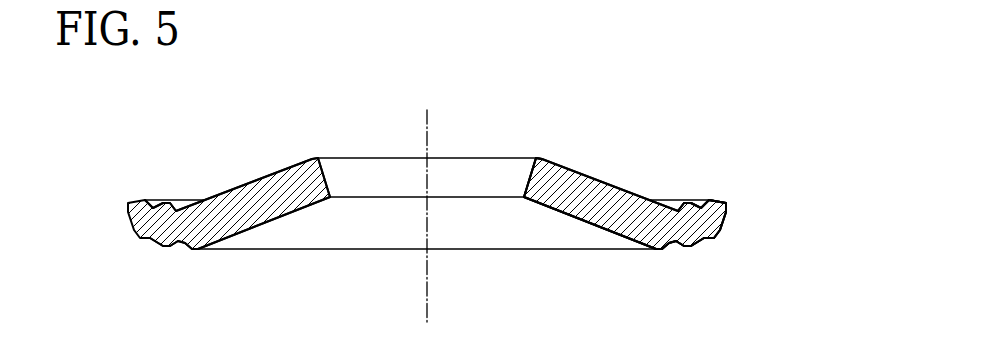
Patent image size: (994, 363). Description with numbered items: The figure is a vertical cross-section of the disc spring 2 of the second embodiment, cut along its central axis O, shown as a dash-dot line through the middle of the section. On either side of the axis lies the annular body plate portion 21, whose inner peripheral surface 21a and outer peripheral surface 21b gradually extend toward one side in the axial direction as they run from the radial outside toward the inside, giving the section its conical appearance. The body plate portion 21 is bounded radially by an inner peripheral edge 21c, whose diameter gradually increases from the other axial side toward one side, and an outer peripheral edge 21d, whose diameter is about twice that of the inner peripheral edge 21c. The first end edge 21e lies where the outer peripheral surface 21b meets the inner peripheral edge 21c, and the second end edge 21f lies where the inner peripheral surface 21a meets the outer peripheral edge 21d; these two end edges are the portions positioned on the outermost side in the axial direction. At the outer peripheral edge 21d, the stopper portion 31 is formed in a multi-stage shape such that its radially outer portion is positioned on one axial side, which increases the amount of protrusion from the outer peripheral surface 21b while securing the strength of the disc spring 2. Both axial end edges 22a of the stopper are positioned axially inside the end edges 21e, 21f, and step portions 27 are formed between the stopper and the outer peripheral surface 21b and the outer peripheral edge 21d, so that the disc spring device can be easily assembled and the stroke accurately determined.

The disc spring 2 is at (733, 93).
The central axis O is at (432, 125).
The body plate portion 21 is at (604, 174).
The inner peripheral surface 21a is at (260, 227).
The outer peripheral surface 21b is at (237, 188).
The inner peripheral edge 21c is at (325, 172).
The outer peripheral edge 21d is at (670, 249).
The first end edge 21e is at (537, 158).
The second end edge 21f is at (660, 249).
The axial end edge of the stopper portion 22a is at (707, 200).
The step portion 27 is at (178, 208).
The stopper portion 31 is at (738, 200).